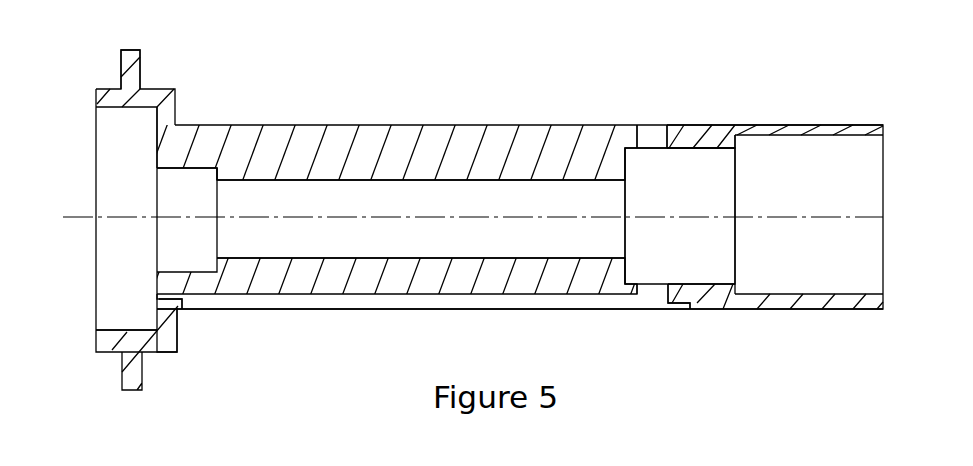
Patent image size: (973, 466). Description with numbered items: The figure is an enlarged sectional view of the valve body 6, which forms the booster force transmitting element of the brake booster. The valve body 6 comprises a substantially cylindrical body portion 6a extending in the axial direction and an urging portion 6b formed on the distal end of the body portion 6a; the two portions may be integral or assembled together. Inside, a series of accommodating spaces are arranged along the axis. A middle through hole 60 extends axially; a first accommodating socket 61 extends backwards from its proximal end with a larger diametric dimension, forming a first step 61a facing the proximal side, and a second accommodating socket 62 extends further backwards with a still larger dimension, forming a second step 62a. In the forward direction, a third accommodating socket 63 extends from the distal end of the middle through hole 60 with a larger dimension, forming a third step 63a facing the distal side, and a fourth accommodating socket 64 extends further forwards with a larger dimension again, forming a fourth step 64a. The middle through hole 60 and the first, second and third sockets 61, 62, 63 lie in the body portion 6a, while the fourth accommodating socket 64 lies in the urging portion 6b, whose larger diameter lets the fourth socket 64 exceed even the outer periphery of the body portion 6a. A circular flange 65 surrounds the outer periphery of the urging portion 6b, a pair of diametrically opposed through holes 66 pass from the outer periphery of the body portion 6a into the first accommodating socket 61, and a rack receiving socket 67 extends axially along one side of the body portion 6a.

The valve body 6 is at (451, 68).
The body portion 6a is at (532, 133).
The urging portion 6b is at (155, 92).
The middle through hole 60 is at (508, 245).
The first accommodating socket 61 is at (718, 253).
The first step 61a is at (625, 162).
The second accommodating socket 62 is at (865, 190).
The second step 62a is at (735, 142).
The third accommodating socket 63 is at (170, 260).
The third step 63a is at (215, 170).
The fourth accommodating socket 64 is at (110, 158).
The fourth step 64a is at (157, 313).
The circular flange 65 is at (140, 377).
The through holes 66 is at (650, 133).
The rack receiving socket 67 is at (350, 302).